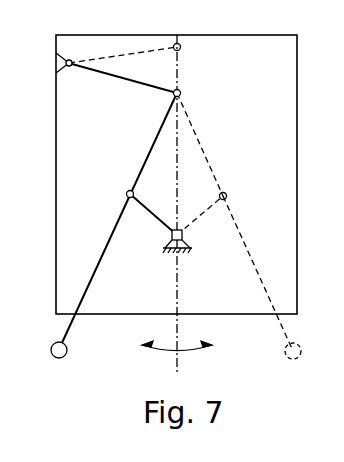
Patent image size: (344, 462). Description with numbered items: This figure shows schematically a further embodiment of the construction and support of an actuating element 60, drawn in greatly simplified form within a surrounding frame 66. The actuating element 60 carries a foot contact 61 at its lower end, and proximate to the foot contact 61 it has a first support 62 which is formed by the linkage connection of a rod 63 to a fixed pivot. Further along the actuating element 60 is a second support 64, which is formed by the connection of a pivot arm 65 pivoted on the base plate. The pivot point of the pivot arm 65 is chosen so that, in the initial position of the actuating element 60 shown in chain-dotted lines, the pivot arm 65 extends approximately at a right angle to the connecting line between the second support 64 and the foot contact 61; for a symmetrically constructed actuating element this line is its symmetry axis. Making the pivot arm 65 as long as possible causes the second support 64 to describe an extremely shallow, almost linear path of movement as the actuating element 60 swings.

The actuating element 60 is at (89, 287).
The foot contact 61 is at (54, 344).
The first support 62 is at (126, 192).
The rod 63 is at (158, 221).
The second support 64 is at (181, 90).
The pivot arm 65 is at (133, 84).
The frame 66 is at (289, 96).